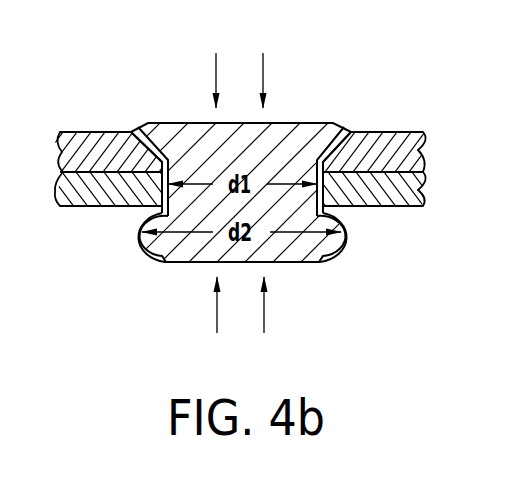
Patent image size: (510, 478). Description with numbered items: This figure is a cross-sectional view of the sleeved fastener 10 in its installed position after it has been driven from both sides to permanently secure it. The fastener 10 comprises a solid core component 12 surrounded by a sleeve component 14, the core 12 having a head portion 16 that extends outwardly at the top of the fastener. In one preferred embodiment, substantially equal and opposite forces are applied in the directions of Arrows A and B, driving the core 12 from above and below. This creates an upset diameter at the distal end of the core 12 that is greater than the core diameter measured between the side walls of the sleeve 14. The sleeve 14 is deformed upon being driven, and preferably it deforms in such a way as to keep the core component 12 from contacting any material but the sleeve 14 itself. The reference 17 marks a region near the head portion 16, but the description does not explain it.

The sleeved fastener 10 is at (247, 193).
The core component 12 is at (293, 252).
The sleeve component 14 is at (345, 252).
The head portion 16 is at (172, 125).
The head flange lip 17 is at (287, 122).
The Arrow A is at (264, 67).
The Arrow B is at (217, 310).